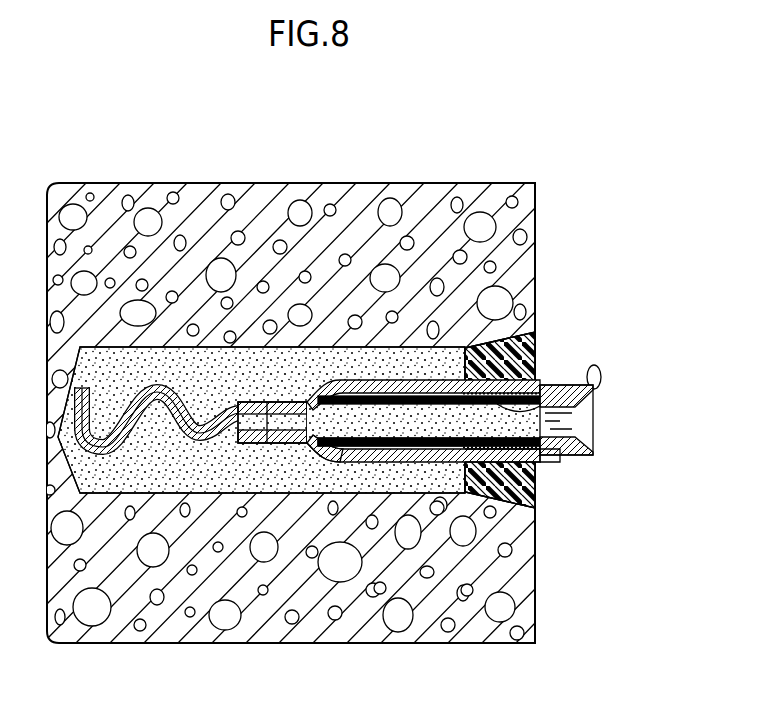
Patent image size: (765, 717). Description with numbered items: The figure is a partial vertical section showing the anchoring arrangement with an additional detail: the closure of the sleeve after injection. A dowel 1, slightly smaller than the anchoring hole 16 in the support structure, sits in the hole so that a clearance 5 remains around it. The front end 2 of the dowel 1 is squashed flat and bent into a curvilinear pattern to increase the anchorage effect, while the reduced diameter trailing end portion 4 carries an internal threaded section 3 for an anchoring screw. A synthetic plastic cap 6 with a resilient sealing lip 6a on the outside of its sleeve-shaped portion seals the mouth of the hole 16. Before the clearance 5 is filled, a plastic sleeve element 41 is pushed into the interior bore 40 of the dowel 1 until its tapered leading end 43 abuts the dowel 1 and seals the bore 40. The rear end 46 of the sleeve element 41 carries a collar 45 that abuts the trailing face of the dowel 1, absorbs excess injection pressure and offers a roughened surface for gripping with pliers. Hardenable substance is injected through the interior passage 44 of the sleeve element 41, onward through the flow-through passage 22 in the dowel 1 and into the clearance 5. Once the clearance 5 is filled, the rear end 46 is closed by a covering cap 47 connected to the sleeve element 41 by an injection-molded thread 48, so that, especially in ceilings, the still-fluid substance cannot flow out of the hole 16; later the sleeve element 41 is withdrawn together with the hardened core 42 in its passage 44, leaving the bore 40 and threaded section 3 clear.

The dowel 1 is at (368, 462).
The front end 2 is at (112, 447).
The threaded section 3 is at (540, 400).
The trailing end portion 4 is at (490, 495).
The clearance 5 is at (405, 347).
The cap 6 is at (467, 345).
The sealing lip 6a is at (512, 340).
The anchoring hole 16 is at (80, 348).
The flow-through passage 22 is at (250, 402).
The interior bore 40 is at (415, 448).
The sleeve element 41 is at (440, 446).
The core 42 is at (393, 427).
The tapered leading end 43 is at (330, 457).
The interior passage 44 is at (343, 382).
The collar 45 is at (567, 448).
The rear end 46 is at (553, 456).
The covering cap 47 is at (593, 434).
The injection-molded thread 48 is at (605, 368).